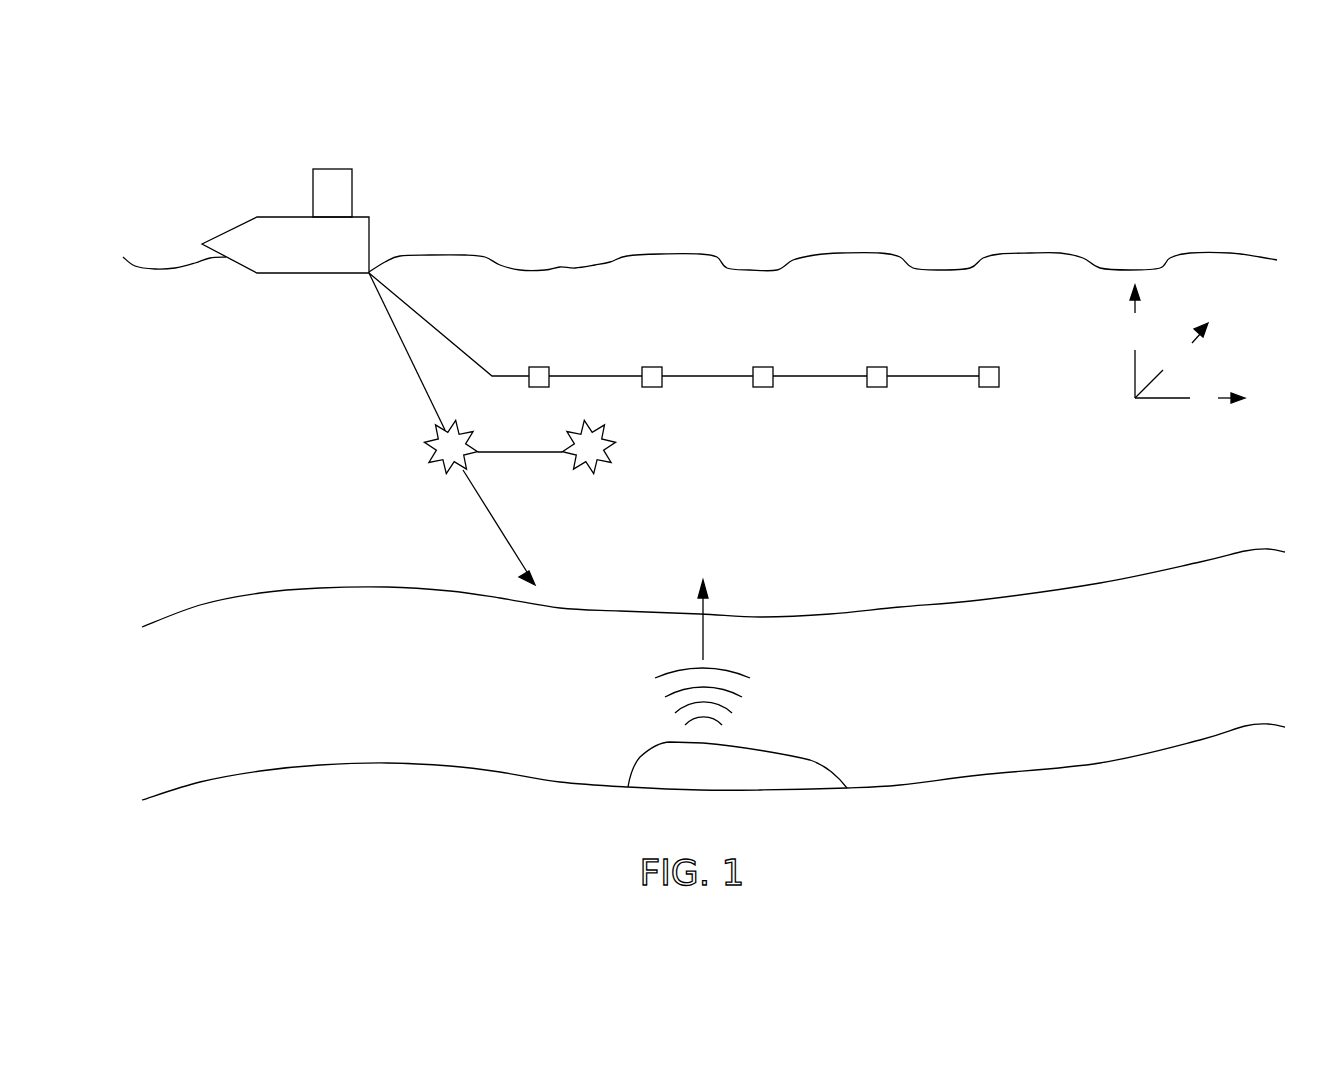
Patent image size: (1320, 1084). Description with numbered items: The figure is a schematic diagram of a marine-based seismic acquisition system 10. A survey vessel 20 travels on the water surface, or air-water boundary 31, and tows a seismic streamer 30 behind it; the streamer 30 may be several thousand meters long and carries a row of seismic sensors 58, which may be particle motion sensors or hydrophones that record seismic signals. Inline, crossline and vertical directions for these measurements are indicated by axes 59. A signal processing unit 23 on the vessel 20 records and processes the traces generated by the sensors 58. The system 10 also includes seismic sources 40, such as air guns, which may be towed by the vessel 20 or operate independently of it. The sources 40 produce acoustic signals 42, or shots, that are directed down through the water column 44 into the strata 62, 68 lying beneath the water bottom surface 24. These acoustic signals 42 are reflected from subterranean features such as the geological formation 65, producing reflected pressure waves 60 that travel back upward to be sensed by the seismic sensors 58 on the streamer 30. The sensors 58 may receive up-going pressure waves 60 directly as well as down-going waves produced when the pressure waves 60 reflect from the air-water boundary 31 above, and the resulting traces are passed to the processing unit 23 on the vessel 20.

The marine-based seismic acquisition system 10 is at (186, 175).
The survey vessel 20 is at (370, 216).
The signal processing unit 23 is at (333, 168).
The air-water boundary 31 is at (1012, 255).
The seismic streamer 30 is at (450, 336).
The seismic sensors 58 is at (540, 367).
The water column 44 is at (277, 427).
The seismic sources 40 is at (477, 452).
The acoustic signals 42 is at (508, 550).
The water bottom surface 24 is at (905, 607).
The stratum 62 is at (255, 679).
The pressure waves 60 is at (646, 704).
The geological formation 65 is at (690, 775).
The stratum 68 is at (304, 814).
The axes 59 is at (1133, 426).